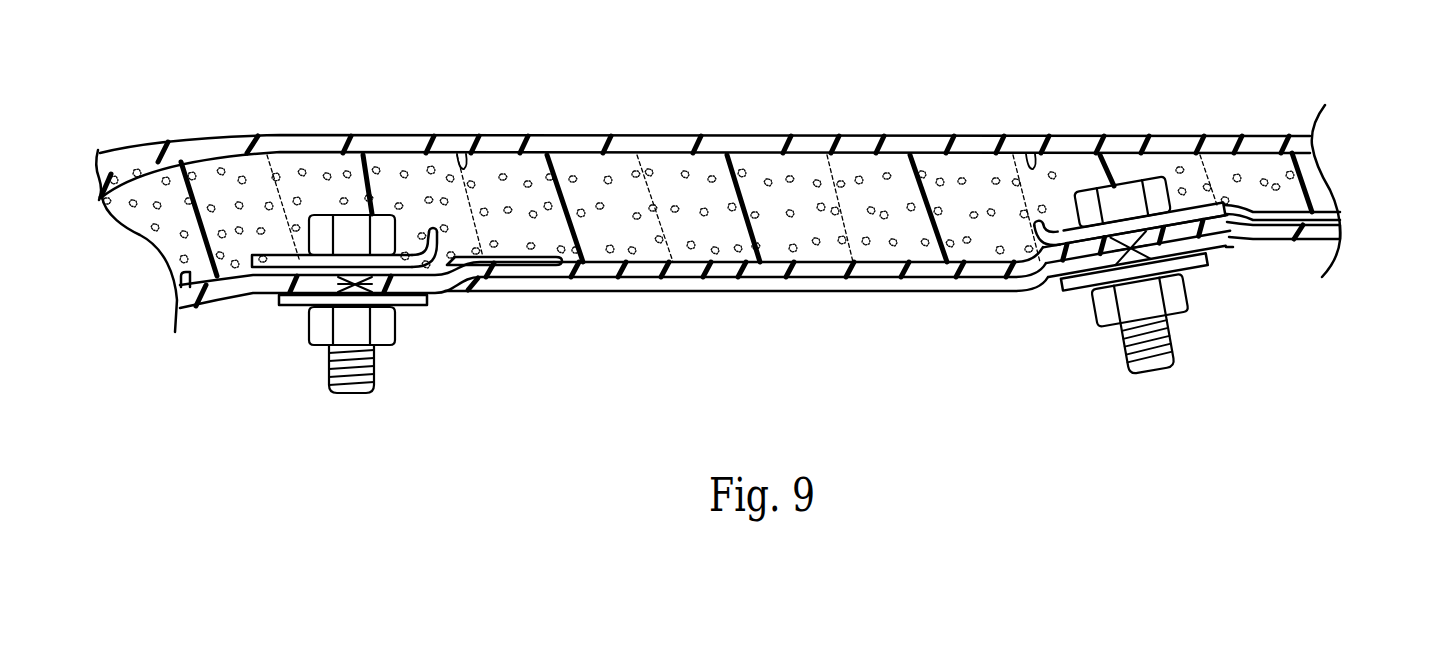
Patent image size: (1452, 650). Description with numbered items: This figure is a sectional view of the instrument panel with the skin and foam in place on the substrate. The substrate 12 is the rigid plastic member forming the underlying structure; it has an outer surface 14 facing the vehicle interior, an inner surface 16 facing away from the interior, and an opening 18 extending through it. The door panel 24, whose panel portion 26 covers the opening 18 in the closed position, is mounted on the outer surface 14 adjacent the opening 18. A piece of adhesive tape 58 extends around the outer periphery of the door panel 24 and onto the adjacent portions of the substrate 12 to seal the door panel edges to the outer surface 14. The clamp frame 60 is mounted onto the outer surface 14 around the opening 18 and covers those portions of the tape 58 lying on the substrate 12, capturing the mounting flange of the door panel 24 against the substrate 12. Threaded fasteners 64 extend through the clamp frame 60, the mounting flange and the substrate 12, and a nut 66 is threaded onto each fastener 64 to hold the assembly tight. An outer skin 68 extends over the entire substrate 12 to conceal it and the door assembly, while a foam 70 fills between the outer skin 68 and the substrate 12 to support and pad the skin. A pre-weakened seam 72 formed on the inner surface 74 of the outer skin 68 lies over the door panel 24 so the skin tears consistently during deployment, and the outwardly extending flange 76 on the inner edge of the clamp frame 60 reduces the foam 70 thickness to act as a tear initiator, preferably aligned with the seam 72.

The substrate 12 is at (1338, 226).
The outer surface 14 is at (181, 277).
The inner surface 16 is at (1233, 247).
The opening 18 is at (823, 280).
The door panel 24 is at (895, 276).
The panel portion 26 is at (731, 277).
The adhesive tape 58 is at (553, 260).
The clamp frame 60 is at (307, 258).
The threaded fastener 64 is at (353, 230).
The nut 66 is at (323, 327).
The outer skin 68 is at (765, 143).
The foam 70 is at (913, 190).
The pre-weakened seam 72 is at (462, 160).
The inner surface of the outer skin 74 is at (323, 163).
The outwardly extending flange 76 is at (430, 257).